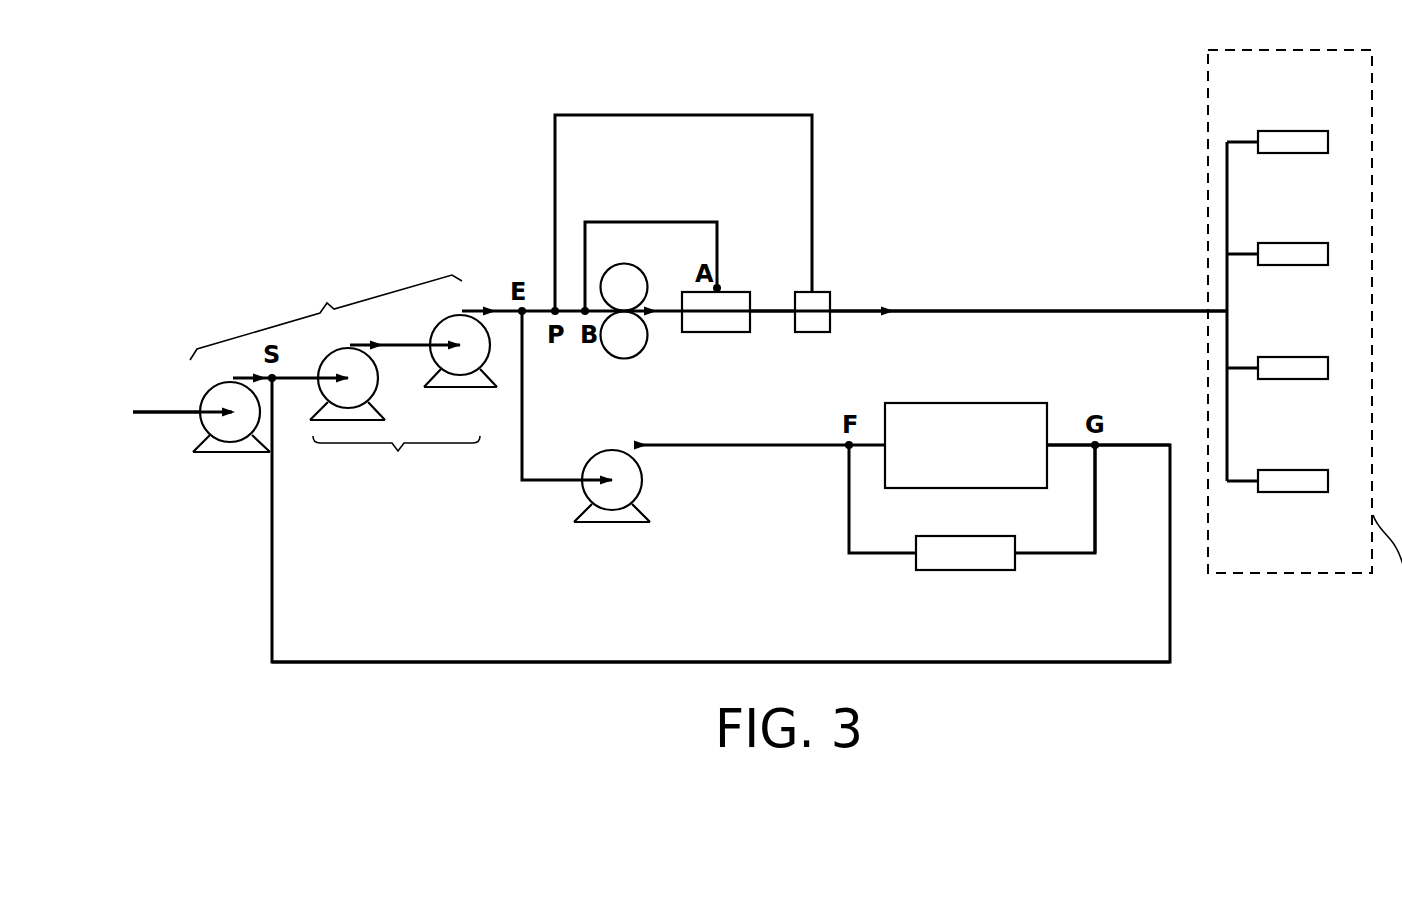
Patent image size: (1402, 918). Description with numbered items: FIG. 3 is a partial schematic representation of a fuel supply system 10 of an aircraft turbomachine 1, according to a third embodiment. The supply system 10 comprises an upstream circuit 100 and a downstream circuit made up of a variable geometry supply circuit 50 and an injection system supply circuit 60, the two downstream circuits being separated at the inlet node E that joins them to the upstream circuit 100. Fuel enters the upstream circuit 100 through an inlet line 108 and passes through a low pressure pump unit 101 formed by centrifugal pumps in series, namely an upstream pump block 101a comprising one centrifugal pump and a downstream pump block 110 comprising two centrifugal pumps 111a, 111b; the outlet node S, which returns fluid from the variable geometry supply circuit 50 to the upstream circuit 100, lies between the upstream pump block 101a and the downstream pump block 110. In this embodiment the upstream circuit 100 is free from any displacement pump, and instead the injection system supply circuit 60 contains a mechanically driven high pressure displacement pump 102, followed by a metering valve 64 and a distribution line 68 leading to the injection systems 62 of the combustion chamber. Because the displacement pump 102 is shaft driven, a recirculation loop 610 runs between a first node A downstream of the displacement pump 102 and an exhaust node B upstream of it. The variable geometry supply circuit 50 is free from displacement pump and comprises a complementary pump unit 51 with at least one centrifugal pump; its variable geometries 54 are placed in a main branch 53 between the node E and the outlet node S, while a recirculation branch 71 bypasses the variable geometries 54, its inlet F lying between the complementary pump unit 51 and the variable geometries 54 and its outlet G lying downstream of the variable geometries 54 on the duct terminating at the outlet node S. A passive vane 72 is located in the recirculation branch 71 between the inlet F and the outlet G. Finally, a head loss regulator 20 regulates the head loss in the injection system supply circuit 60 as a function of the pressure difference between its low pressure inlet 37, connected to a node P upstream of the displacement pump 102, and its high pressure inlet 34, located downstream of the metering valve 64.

The turbomachine 1 is at (1050, 735).
The supply system 10 is at (1015, 215).
The head loss regulator 20 is at (822, 322).
The high pressure inlet 34 is at (792, 318).
The low pressure inlet 37 is at (813, 280).
The variable geometry supply circuit 50 is at (590, 666).
The complementary pump unit 51 is at (625, 510).
The main branch 53 is at (1063, 443).
The variable geometries 54 is at (1000, 477).
The injection system supply circuit 60 is at (858, 295).
The injection systems 62 is at (1293, 147).
The metering valve 64 is at (733, 297).
The distribution line 68 is at (1102, 308).
The recirculation branch 71 is at (1097, 475).
The vane 72 is at (1010, 560).
The upstream circuit 100 is at (153, 378).
The low pressure pump unit 101 is at (326, 315).
The upstream pump block 101a is at (230, 430).
The high pressure displacement pump 102 is at (625, 338).
The inlet line 108 is at (170, 415).
The downstream pump block 110 is at (396, 461).
The centrifugal pump 111a is at (332, 413).
The centrifugal pump 111b is at (477, 380).
The recirculation loop 610 is at (653, 218).